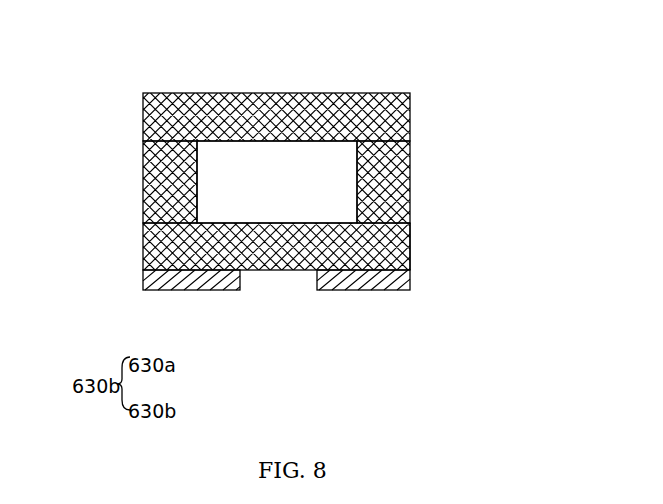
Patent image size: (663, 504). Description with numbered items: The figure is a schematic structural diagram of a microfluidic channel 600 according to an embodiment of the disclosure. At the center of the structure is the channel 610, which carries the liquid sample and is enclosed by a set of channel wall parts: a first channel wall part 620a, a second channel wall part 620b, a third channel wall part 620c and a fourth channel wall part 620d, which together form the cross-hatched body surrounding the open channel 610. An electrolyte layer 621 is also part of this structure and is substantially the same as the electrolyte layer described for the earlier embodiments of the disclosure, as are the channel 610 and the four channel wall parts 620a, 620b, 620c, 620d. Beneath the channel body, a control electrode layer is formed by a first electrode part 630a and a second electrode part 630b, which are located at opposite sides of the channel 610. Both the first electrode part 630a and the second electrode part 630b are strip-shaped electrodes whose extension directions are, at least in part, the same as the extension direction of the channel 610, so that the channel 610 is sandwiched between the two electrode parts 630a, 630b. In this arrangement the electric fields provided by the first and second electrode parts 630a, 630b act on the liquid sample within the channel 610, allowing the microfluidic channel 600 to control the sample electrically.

The microfluidic channel 600 is at (128, 82).
The channel 610 is at (335, 195).
The first channel wall part 620a is at (370, 272).
The second channel wall part 620b is at (410, 200).
The third channel wall part 620c is at (337, 97).
The fourth channel wall part 620d is at (163, 195).
The electrolyte layer 621 is at (410, 248).
The first electrode part 630a is at (410, 276).
The second electrode part 630b is at (143, 288).